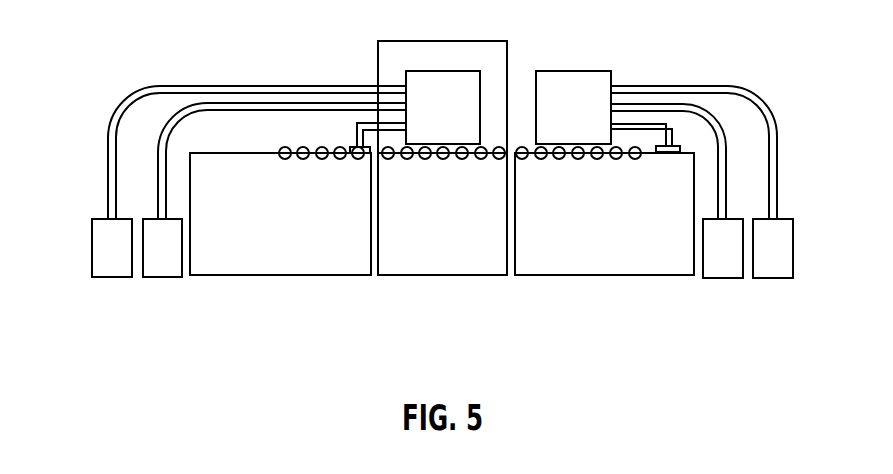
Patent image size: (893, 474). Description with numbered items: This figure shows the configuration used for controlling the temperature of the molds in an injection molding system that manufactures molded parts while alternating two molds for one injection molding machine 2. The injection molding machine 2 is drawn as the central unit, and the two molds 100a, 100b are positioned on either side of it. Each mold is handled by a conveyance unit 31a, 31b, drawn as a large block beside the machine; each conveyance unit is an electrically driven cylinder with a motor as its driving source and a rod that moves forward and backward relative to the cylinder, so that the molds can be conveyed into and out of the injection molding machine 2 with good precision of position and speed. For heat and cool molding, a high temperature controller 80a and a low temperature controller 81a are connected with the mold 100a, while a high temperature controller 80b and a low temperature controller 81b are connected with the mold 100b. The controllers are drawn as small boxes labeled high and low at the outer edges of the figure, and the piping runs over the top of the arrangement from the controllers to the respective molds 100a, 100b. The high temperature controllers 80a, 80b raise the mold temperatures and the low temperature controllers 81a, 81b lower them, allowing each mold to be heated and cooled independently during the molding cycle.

The injection molding machine 2 is at (414, 41).
The mold 100a is at (574, 71).
The mold 100b is at (443, 71).
The conveyance unit 31a is at (604, 276).
The conveyance unit 31b is at (286, 276).
The high temperature controller 80a is at (703, 266).
The high temperature controller 80b is at (92, 249).
The low temperature controller 81a is at (793, 247).
The low temperature controller 81b is at (183, 270).